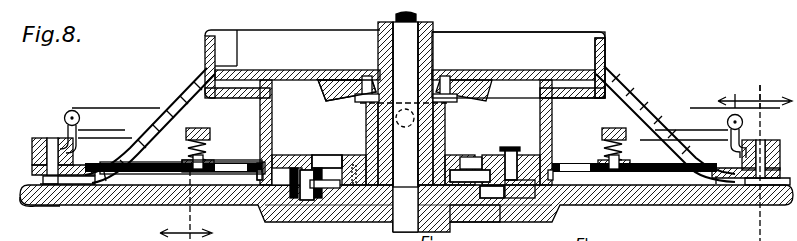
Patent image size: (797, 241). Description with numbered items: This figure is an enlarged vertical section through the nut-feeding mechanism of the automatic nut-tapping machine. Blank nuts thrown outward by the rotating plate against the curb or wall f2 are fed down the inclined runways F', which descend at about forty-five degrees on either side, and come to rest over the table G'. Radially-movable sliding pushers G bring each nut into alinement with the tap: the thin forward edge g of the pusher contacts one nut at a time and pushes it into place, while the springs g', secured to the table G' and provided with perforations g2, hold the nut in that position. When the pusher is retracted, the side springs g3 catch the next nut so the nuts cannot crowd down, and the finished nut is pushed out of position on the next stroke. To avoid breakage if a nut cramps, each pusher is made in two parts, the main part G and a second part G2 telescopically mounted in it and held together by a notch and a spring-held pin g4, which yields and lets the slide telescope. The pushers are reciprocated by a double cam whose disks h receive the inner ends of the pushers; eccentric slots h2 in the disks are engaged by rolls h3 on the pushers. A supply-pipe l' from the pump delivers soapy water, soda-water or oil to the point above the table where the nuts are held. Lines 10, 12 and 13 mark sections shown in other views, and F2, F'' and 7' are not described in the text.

The supply-pipe l' is at (399, 117).
The runway F' is at (518, 65).
The wedge block F2 is at (345, 79).
The curb or wall f2 is at (606, 50).
The inclined arm F'' is at (410, 125).
The section line 10 is at (761, 93).
The spring-held pin g4 is at (184, 132).
The sliding pusher G is at (222, 143).
The side spring g3 is at (257, 163).
The second pusher part G2 is at (212, 170).
The cam disk h is at (452, 158).
The eccentric slot h2 is at (333, 196).
The roll h3 is at (510, 152).
The perforation g2 is at (42, 190).
The spring g' is at (49, 203).
The thin forward edge g is at (67, 202).
The section line 13 is at (318, 205).
The section line 12 is at (490, 196).
The base block 7' is at (520, 210).
The table G' is at (474, 223).